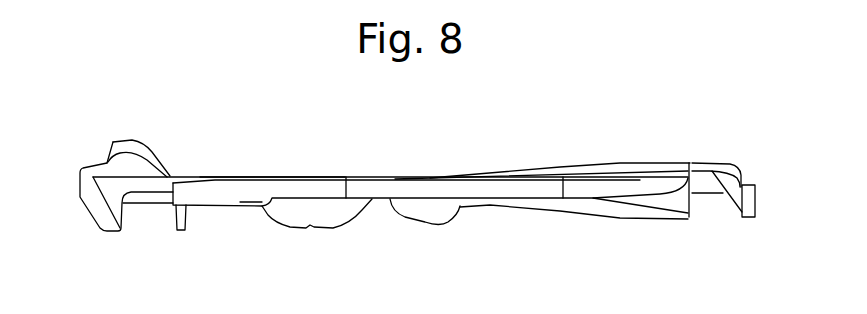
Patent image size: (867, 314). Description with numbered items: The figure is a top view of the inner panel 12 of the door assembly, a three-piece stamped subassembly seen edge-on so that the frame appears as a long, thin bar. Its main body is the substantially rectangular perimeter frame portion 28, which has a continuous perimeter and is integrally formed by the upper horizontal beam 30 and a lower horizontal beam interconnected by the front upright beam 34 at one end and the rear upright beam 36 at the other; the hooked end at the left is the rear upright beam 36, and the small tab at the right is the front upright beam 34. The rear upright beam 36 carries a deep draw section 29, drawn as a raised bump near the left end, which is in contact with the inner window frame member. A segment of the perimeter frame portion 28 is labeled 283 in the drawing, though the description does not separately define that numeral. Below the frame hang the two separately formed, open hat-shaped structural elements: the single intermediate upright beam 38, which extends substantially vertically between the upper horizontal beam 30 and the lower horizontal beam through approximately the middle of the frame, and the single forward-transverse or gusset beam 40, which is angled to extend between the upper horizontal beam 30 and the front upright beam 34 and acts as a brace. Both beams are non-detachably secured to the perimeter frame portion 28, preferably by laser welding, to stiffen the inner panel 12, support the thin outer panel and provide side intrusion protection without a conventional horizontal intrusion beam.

The inner panel 12 is at (621, 136).
The perimeter frame portion 28 is at (430, 165).
The plate segment 28-3 283 is at (392, 190).
The deep draw section 29 is at (114, 142).
The upper horizontal beam 30 is at (272, 177).
The front upright beam 34 is at (757, 202).
The rear upright beam 36 is at (85, 207).
The intermediate upright beam 38 is at (445, 230).
The forward-transverse beam 40 is at (586, 231).